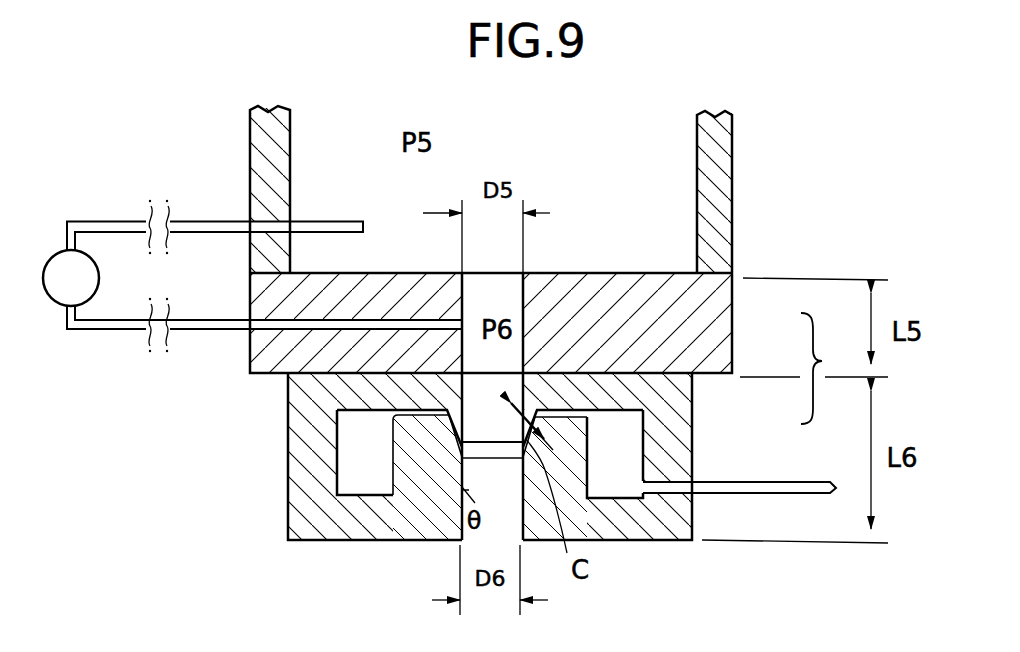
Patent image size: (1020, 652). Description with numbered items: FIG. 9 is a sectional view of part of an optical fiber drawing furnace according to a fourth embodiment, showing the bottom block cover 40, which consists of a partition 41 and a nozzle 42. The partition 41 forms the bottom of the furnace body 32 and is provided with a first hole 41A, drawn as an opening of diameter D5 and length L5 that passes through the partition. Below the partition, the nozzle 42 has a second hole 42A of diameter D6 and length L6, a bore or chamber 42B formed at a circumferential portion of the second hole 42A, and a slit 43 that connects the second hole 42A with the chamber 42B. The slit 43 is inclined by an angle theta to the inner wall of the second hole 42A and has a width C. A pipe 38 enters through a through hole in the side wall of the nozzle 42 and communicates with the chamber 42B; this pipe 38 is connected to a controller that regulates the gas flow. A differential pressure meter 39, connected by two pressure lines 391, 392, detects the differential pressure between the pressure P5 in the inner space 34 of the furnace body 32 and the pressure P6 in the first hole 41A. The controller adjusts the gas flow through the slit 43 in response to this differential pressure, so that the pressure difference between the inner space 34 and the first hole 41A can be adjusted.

The furnace body 32 is at (718, 222).
The inner space 34 is at (632, 178).
The pipe 38 is at (717, 486).
The differential pressure meter 39 is at (52, 252).
The upstream pressure pipe 391 is at (195, 219).
The downstream pressure pipe 392 is at (193, 319).
The bottom block cover 40 is at (829, 368).
The partition 41 is at (700, 328).
The first hole 41A is at (523, 287).
The nozzle 42 is at (690, 434).
The second hole 42A is at (523, 514).
The chamber 42B is at (656, 541).
The slit 43 is at (455, 420).